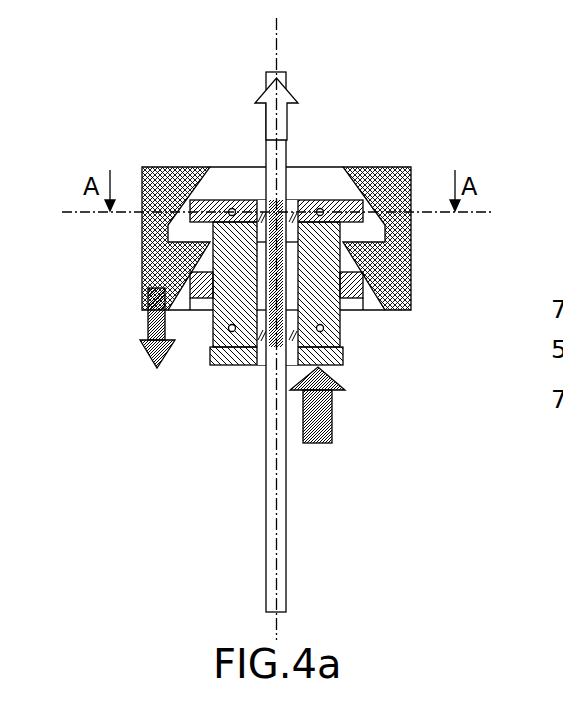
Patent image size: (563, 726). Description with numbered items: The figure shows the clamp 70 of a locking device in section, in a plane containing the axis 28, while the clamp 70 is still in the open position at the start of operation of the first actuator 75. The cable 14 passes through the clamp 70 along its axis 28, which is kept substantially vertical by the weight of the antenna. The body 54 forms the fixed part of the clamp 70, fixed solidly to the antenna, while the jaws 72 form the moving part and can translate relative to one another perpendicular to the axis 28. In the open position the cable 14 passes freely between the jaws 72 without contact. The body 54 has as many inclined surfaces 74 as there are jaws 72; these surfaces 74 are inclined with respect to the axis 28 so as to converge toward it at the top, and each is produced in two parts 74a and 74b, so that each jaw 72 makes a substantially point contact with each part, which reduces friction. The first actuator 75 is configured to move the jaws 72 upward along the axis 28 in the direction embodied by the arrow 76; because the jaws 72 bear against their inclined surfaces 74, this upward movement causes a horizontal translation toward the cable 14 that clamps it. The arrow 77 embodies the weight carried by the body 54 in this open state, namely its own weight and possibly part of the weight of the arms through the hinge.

The cable 14 is at (266, 512).
The axis 28 is at (280, 44).
The body 54 is at (370, 175).
The clamp 70 is at (282, 246).
The jaws 72 is at (320, 317).
The inclined surfaces 74 is at (282, 256).
The first part of inclined surface 74a is at (186, 222).
The second part of inclined surface 74b is at (188, 284).
The first actuator 75 is at (320, 355).
The arrow 76 is at (318, 412).
The arrow 77 is at (142, 324).